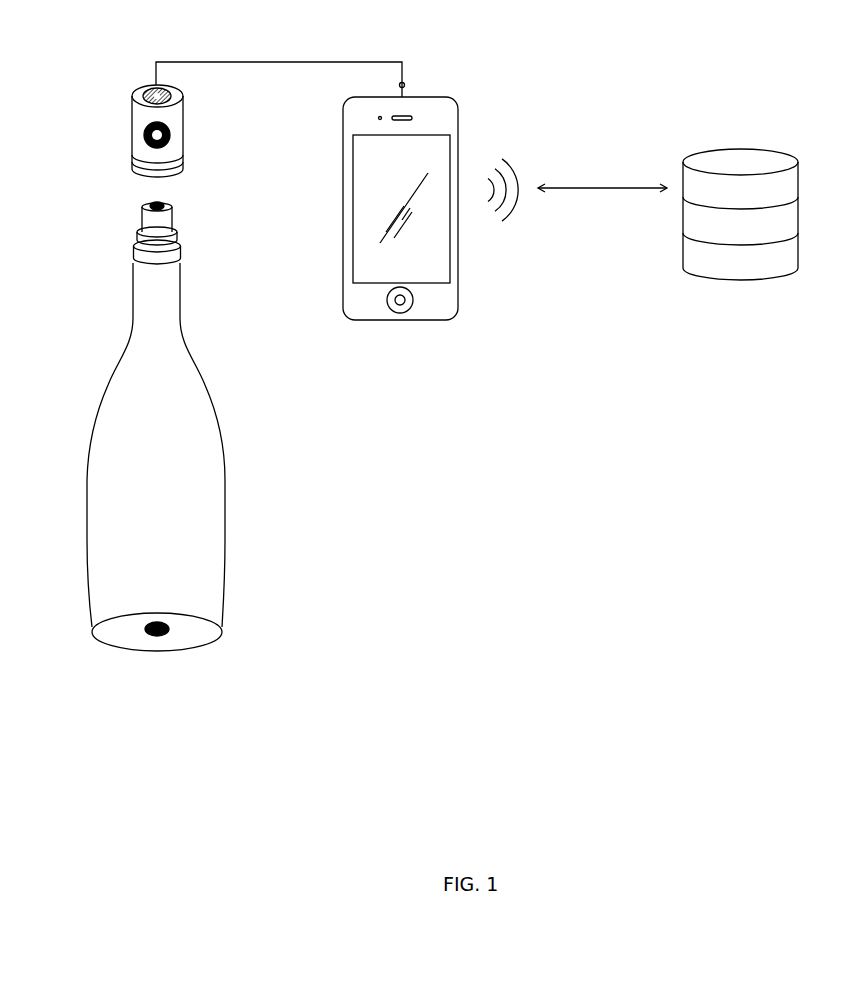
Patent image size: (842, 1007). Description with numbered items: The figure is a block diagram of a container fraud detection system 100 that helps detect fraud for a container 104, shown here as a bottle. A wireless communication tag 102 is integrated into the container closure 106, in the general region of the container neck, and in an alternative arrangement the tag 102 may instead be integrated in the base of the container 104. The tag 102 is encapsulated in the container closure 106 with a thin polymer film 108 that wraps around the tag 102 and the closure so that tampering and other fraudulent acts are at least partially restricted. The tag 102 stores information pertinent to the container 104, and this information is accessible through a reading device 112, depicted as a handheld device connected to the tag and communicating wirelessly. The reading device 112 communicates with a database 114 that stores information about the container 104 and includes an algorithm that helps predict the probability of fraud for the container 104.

The container fraud detection system 100 is at (575, 633).
The wireless communication tag 102 is at (145, 88).
The container 104 is at (228, 492).
The container closure 106 is at (130, 110).
The polymer film 108 is at (180, 82).
The reading device 112 is at (353, 187).
The database 114 is at (733, 280).